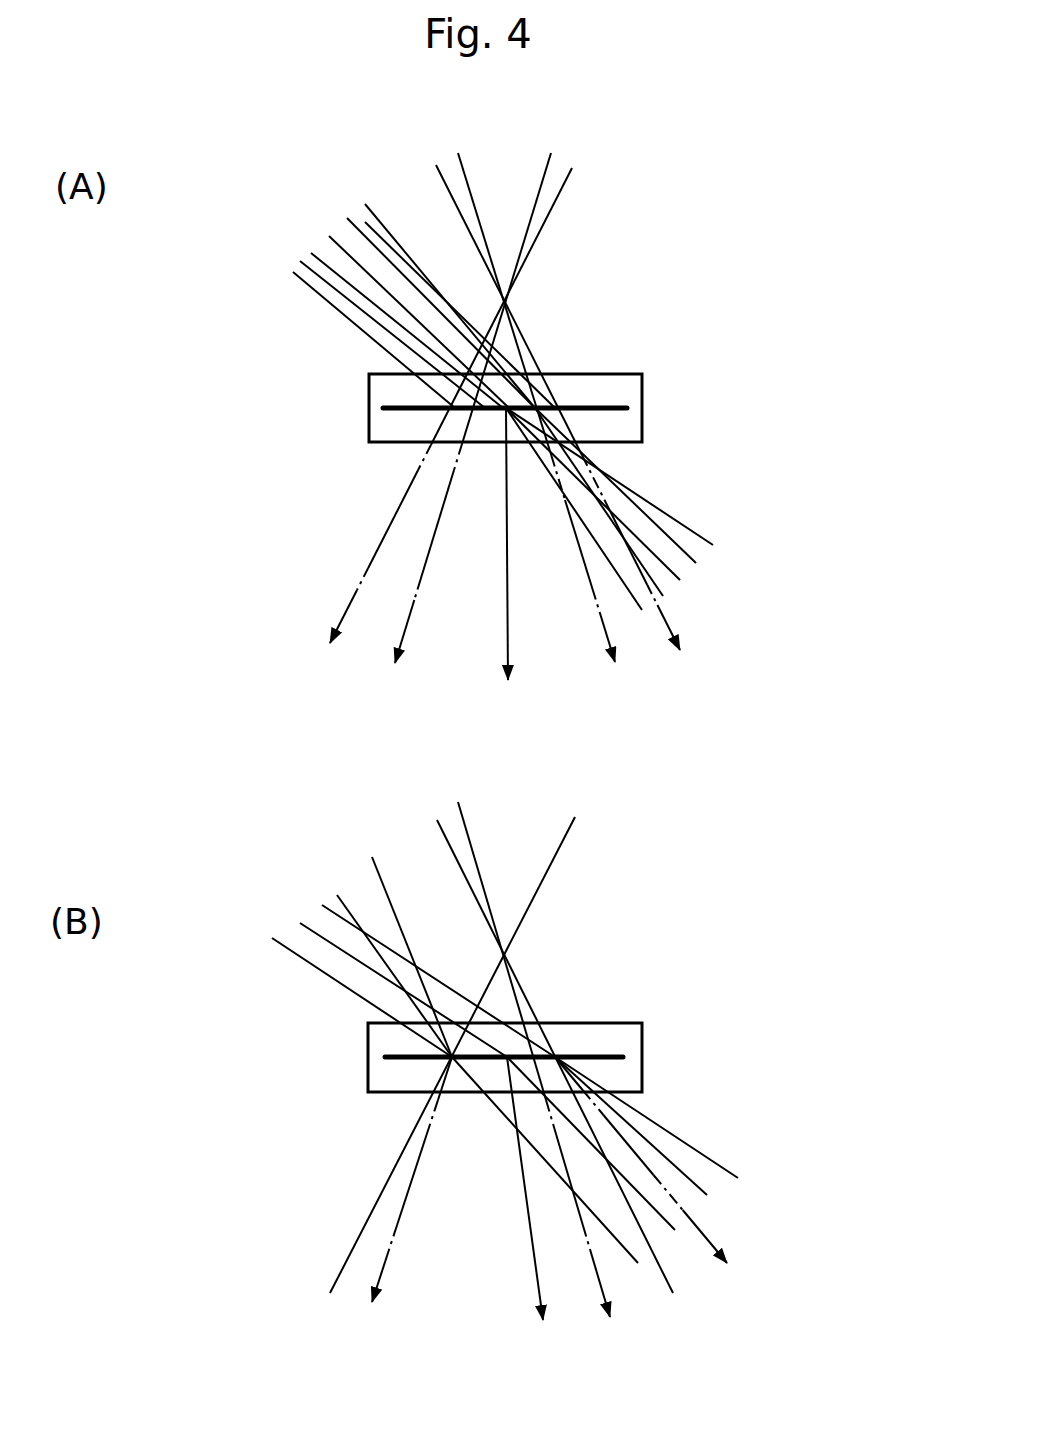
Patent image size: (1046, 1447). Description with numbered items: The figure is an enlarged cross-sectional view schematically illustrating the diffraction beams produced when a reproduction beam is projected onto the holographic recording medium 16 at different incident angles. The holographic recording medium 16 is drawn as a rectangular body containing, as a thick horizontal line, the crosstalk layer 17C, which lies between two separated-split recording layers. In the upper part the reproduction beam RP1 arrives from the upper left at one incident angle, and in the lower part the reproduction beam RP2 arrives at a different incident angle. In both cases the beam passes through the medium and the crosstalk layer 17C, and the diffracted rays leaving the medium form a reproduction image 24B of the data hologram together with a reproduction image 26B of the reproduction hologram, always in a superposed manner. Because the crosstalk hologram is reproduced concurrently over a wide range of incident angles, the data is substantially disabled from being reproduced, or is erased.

The holographic recording medium 16 is at (616, 366).
The crosstalk layer 17C is at (619, 408).
The reproduction beam RP1 is at (368, 320).
The reproduction beam RP2 is at (304, 962).
The reproduction image of the reproduction hologram 26B is at (378, 547).
The reproduction image of the data hologram 24B is at (410, 610).